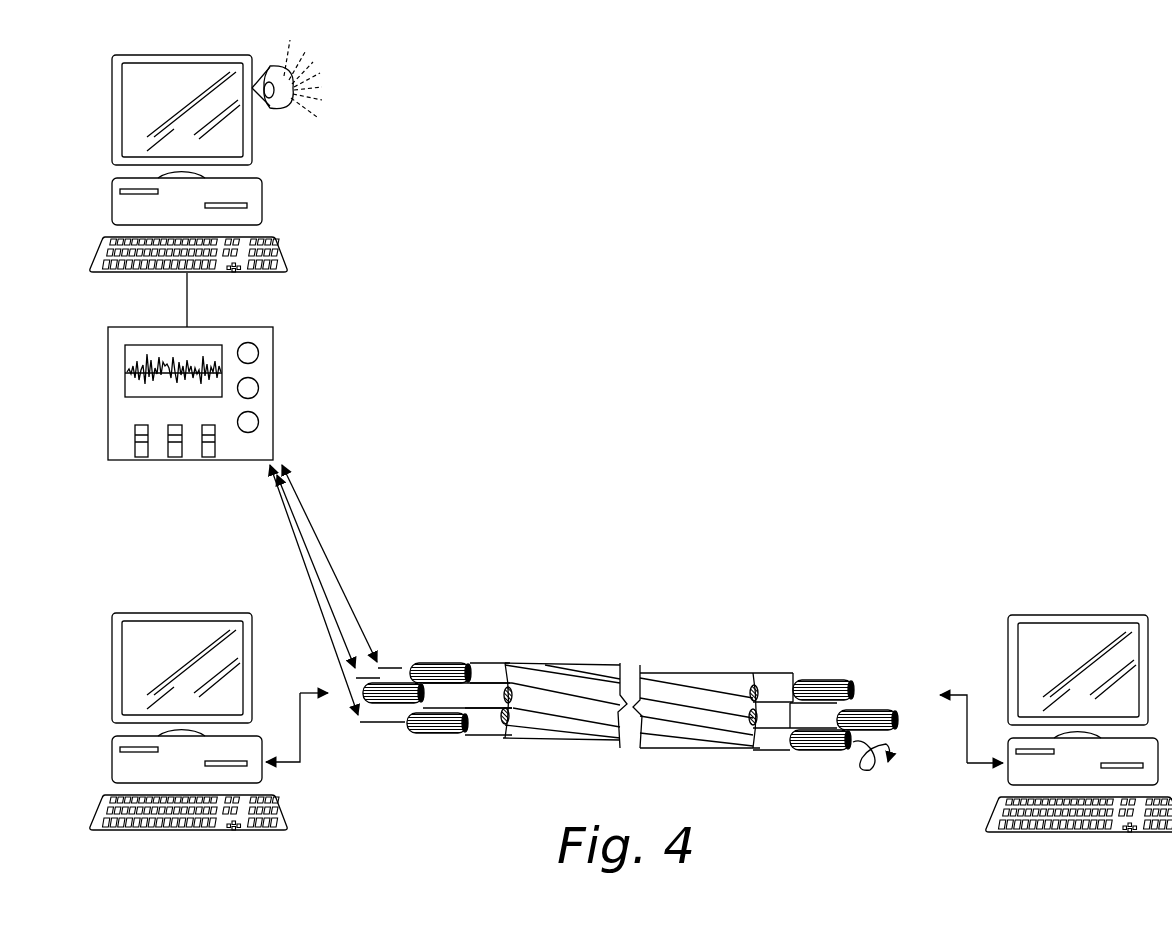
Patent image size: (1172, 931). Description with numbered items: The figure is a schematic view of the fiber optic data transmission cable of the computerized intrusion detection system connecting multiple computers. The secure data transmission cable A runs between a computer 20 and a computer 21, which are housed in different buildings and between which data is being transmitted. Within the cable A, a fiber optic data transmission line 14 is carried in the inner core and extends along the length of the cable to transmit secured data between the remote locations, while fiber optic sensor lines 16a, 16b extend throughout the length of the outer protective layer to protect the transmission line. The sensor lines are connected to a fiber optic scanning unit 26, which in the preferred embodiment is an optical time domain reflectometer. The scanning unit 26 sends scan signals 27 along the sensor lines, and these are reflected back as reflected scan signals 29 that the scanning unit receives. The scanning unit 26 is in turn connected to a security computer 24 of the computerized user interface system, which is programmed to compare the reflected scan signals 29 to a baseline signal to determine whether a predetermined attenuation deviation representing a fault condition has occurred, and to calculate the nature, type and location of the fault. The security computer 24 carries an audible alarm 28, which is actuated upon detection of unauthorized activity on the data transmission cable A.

The fiber optic data transmission line 14 is at (383, 698).
The fiber optic sensor line 16a is at (447, 727).
The fiber optic sensor line 16b is at (432, 670).
The computer 20 is at (225, 833).
The computer 21 is at (1103, 833).
The security computer 24 is at (117, 127).
The fiber optic scanning unit 26 is at (273, 360).
The scan signals 27 is at (322, 588).
The audible alarm 28 is at (270, 63).
The reflected scan signals 29 is at (290, 523).
The secure data transmission cable A is at (588, 644).